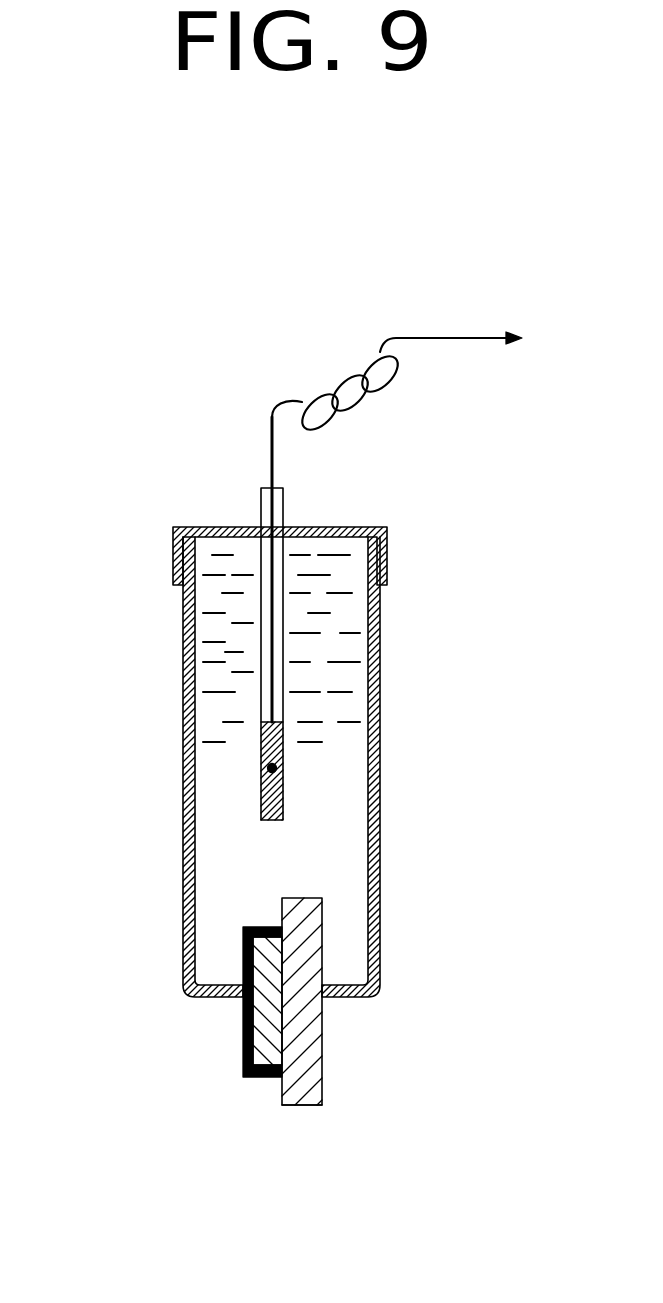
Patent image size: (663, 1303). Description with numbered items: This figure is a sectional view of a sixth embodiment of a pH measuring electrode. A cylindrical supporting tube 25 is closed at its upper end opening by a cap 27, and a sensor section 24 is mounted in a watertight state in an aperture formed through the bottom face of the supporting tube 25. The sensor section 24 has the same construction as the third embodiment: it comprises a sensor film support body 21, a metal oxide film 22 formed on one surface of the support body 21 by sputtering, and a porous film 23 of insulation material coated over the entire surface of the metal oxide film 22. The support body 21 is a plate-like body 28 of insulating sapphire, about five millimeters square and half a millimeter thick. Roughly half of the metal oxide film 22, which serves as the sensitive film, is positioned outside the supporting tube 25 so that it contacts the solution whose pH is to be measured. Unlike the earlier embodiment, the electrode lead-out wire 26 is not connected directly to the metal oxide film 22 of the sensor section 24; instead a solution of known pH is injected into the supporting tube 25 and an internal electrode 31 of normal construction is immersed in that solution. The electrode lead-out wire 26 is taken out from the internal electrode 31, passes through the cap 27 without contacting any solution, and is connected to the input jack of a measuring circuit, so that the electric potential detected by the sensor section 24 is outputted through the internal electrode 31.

The sensor film support body 21 is at (335, 1048).
The metal oxide film 22 is at (263, 1055).
The porous film 23 is at (243, 1012).
The sensor section 24 is at (275, 1079).
The supporting tube 25 is at (380, 835).
The electrode lead-out wire 26 is at (267, 440).
The cap 27 is at (338, 532).
The plate-like body 28 is at (308, 1098).
The internal electrode 31 is at (285, 783).